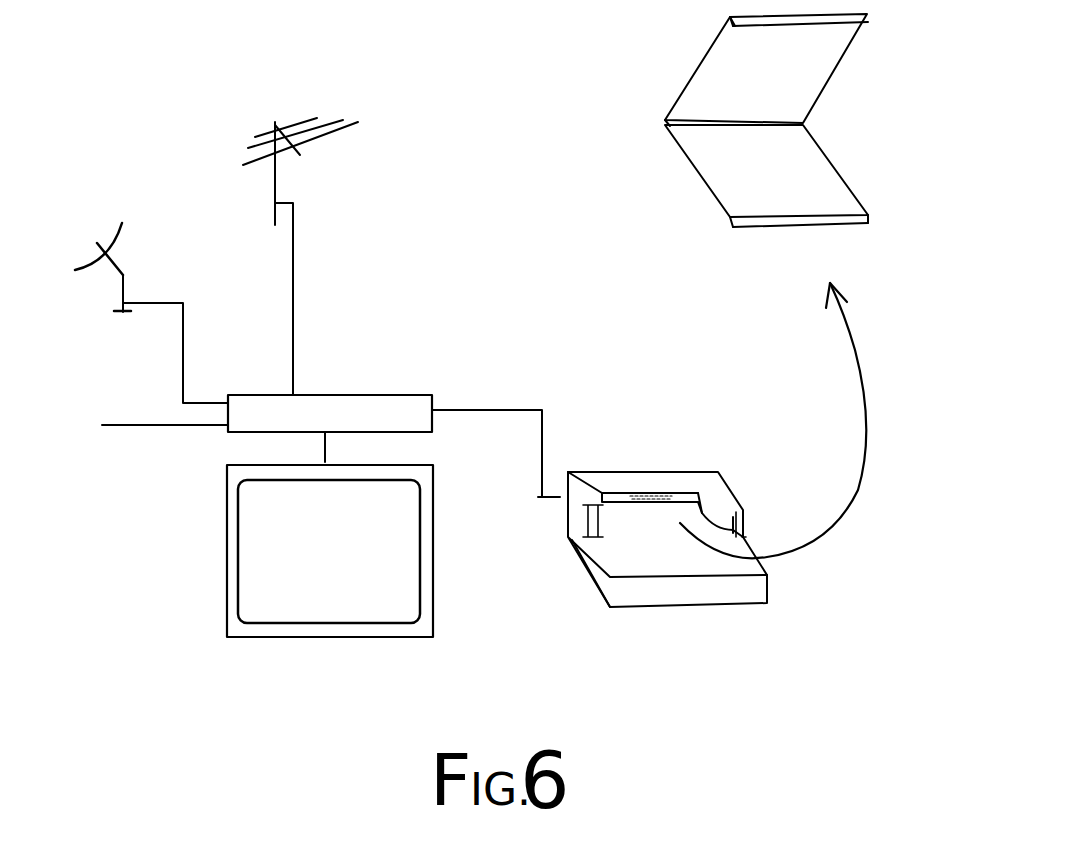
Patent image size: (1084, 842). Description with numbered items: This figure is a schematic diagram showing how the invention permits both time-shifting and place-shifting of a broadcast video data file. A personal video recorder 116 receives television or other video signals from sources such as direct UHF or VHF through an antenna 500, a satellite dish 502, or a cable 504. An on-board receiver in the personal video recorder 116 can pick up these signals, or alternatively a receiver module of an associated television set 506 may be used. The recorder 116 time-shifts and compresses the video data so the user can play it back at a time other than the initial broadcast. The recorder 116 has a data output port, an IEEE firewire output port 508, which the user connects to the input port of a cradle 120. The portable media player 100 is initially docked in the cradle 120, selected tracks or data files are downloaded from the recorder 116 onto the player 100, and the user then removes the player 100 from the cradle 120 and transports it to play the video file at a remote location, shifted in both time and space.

The portable media player 100 is at (855, 114).
The personal video recorder 116 is at (330, 395).
The cradle 120 is at (640, 595).
The antenna 500 is at (308, 148).
The satellite dish 502 is at (125, 273).
The cable 504 is at (152, 423).
The television set 506 is at (373, 582).
The IEEE 1394 firewire output port 508 is at (437, 408).